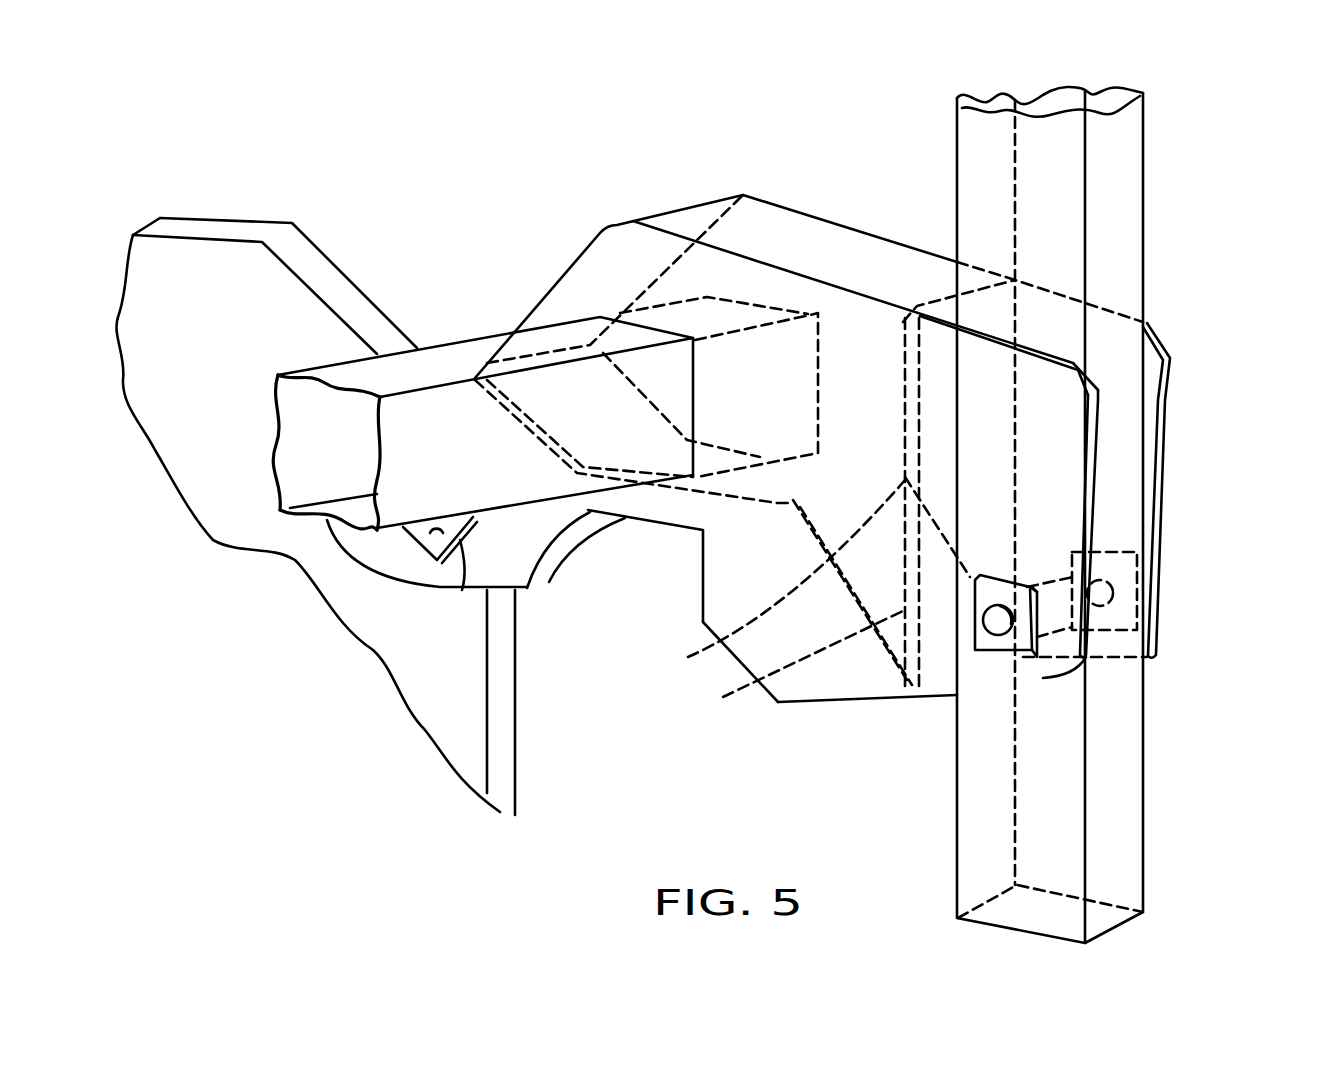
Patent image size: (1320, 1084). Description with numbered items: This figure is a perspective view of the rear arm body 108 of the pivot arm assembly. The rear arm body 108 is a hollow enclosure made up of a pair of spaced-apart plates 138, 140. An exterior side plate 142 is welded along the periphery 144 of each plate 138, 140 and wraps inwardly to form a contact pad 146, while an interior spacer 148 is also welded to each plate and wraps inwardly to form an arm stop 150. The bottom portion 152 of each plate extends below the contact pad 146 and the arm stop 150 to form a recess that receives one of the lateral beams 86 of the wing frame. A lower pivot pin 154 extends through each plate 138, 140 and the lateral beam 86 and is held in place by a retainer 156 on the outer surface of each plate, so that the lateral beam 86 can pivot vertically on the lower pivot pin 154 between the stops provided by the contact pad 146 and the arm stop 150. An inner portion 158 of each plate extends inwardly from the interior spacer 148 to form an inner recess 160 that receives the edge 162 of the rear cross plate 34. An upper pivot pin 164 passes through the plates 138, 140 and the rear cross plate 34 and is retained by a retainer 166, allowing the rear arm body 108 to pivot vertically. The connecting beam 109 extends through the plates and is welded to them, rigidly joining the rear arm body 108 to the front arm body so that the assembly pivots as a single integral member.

The rear cross plate 34 is at (503, 775).
The lateral beam 86 is at (1113, 825).
The rear arm body 108 is at (812, 688).
The connecting beam 109 is at (467, 353).
The plate 138 is at (850, 690).
The plate 140 is at (1172, 387).
The exterior side plate 142 is at (793, 223).
The periphery 144 is at (573, 262).
The contact pad 146 is at (903, 322).
The interior spacer 148 is at (769, 581).
The arm stop 150 is at (789, 610).
The bottom portion 152 is at (1152, 530).
The lower pivot pin 154 is at (990, 643).
The retainer 156 is at (1160, 625).
The inner portion 158 is at (718, 573).
The inner recess 160 is at (693, 543).
The edge 162 is at (503, 717).
The upper pivot pin 164 is at (433, 550).
The retainer 166 is at (463, 547).